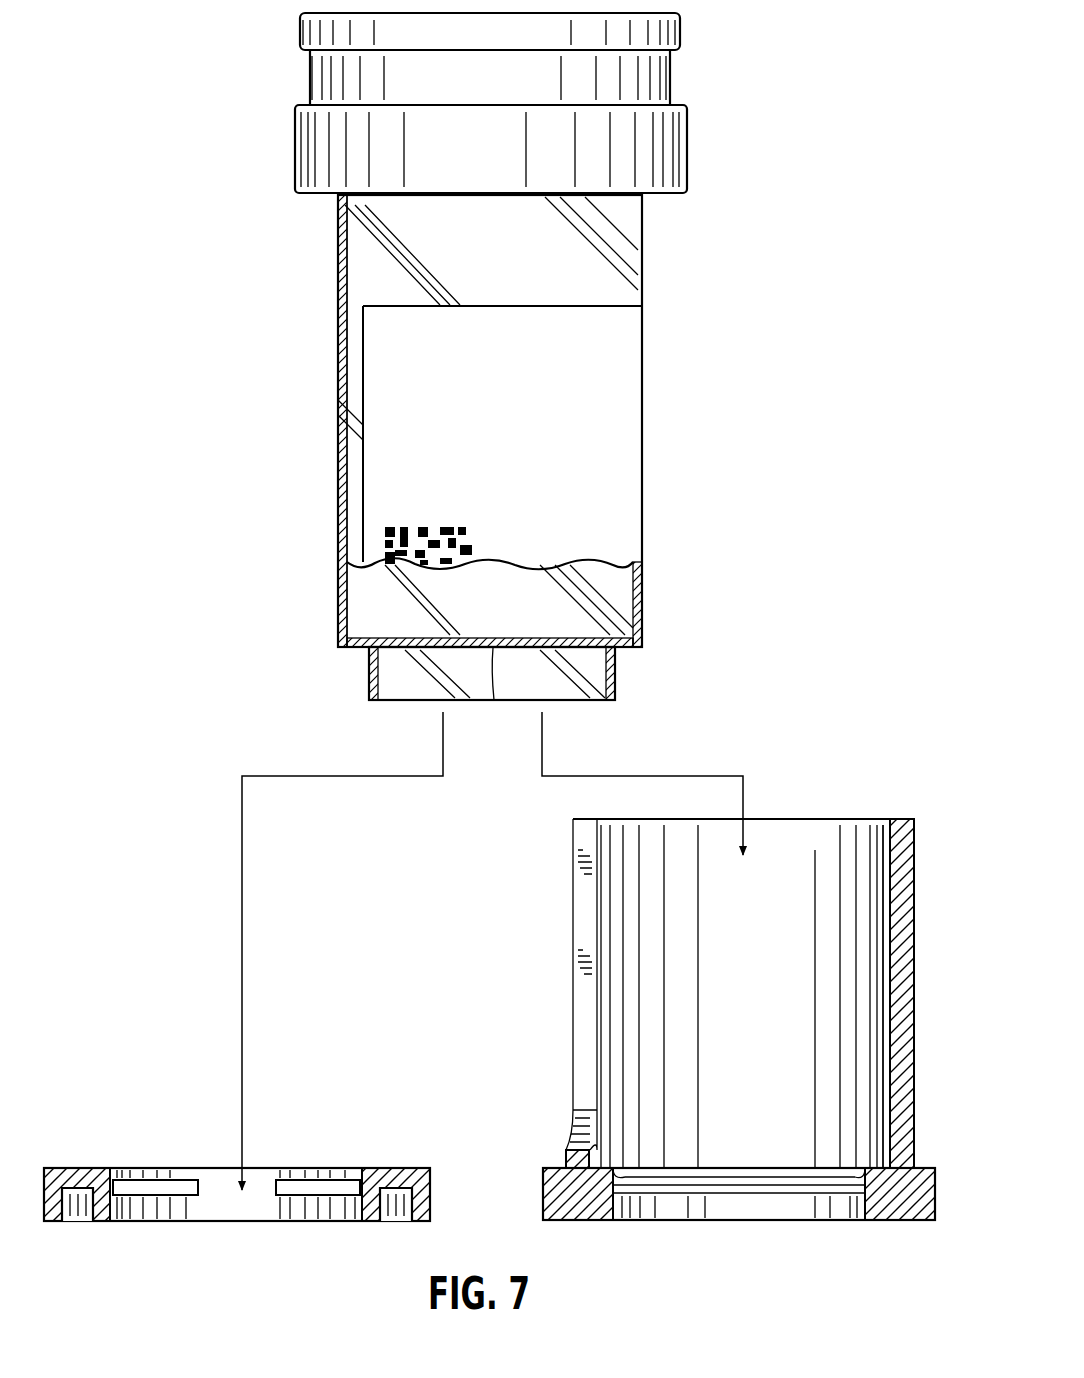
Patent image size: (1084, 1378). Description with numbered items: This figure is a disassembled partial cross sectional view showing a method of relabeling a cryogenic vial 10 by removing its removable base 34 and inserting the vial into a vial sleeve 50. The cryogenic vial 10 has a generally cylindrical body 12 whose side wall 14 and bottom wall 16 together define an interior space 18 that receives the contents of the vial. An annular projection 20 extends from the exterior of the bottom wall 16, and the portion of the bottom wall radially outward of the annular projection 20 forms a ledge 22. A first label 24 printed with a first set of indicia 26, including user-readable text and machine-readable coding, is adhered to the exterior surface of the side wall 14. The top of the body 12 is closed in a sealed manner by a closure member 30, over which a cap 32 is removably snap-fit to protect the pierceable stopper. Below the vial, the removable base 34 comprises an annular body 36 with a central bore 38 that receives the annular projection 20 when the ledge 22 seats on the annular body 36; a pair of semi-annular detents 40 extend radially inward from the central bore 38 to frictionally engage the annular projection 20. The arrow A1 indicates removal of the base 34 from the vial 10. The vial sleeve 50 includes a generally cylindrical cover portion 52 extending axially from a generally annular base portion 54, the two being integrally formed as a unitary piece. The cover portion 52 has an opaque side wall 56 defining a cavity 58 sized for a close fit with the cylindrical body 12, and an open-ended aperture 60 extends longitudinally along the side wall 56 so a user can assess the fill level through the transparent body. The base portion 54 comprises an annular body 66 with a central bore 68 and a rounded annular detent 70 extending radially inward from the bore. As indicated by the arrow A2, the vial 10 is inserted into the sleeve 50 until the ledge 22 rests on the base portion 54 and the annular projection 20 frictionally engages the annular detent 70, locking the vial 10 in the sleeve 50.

The cryogenic vial 10 is at (222, 72).
The cylindrical body 12 is at (323, 258).
The side wall 14 is at (340, 597).
The bottom wall 16 is at (494, 700).
The interior space 18 is at (496, 597).
The annular projection 20 is at (372, 700).
The ledge 22 is at (632, 648).
The first label 24 is at (640, 456).
The first set of indicia 26 is at (393, 353).
The closure member 30 is at (690, 152).
The cap 32 is at (684, 38).
The removable base 34 is at (101, 1108).
The annular body 36 is at (392, 1176).
The central bore 38 is at (362, 1206).
The semi-annular detents 40 is at (155, 1186).
The vial sleeve 50 is at (500, 852).
The cylindrical cover portion 52 is at (565, 918).
The annular base portion 54 is at (707, 1207).
The side wall 56 is at (903, 890).
The cavity 58 is at (889, 838).
The aperture 60 is at (577, 1020).
The annular body 66 is at (543, 1205).
The central bore 68 is at (865, 1208).
The annular detent 70 is at (625, 1188).
The arrow A1 is at (242, 958).
The arrow A2 is at (743, 800).